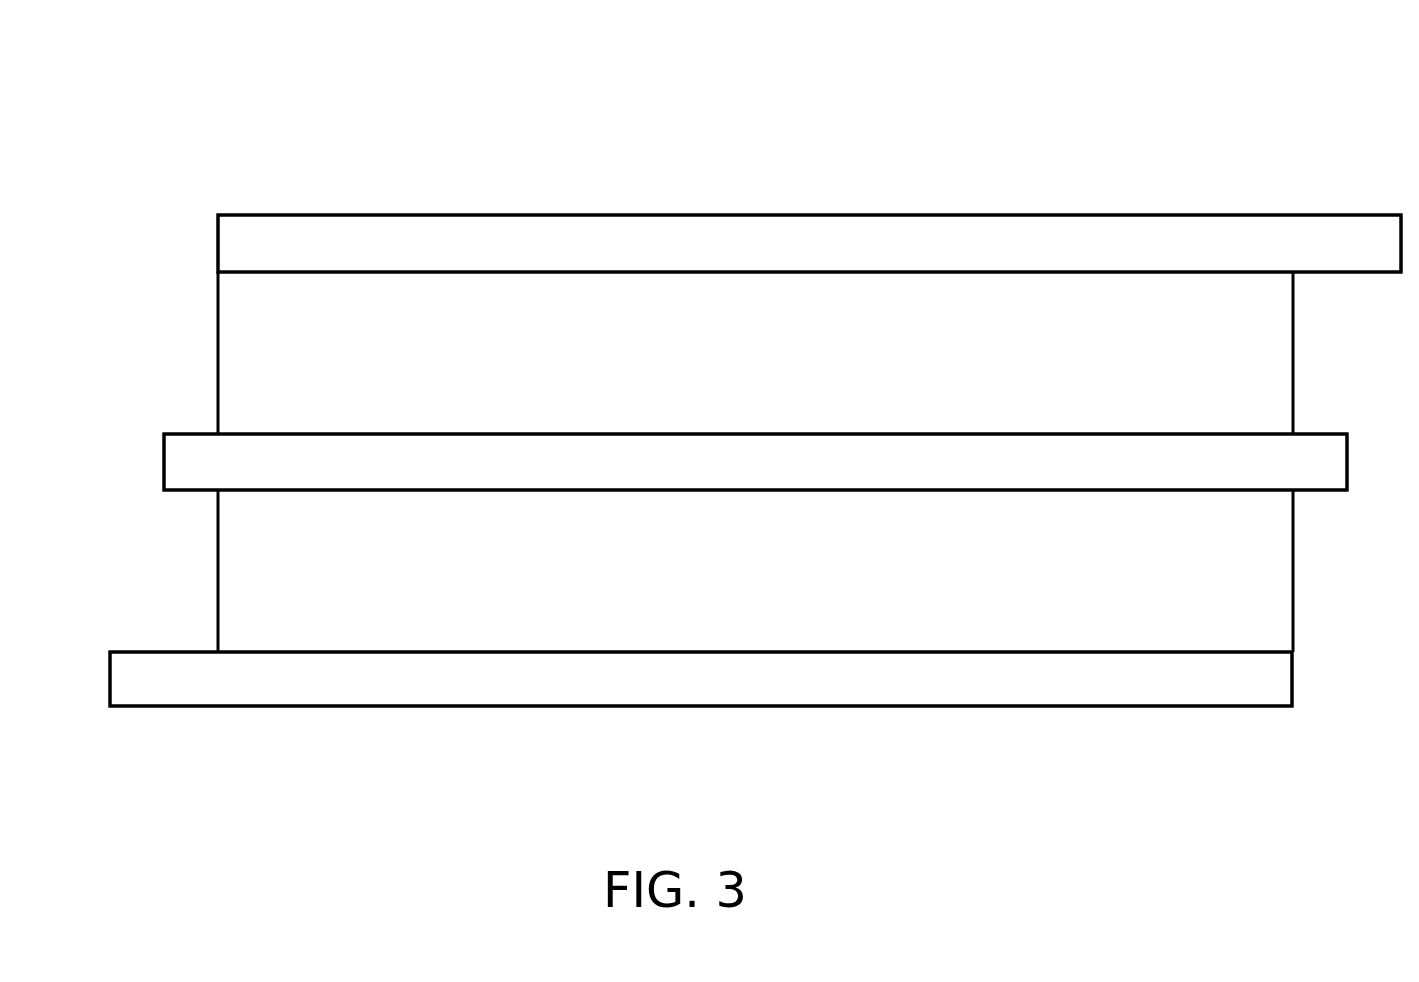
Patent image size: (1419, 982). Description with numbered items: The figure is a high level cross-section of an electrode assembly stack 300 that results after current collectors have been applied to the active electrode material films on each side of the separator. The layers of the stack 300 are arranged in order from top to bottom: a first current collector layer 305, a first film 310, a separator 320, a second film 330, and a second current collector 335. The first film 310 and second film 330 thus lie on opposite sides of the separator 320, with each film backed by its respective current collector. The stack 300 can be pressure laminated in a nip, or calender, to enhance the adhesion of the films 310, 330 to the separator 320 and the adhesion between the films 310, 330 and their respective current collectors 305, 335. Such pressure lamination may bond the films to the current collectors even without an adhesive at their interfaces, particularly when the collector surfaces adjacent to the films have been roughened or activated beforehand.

The electrode assembly stack 300 is at (712, 112).
The first current collector layer 305 is at (809, 243).
The first film 310 is at (755, 353).
The separator 320 is at (755, 462).
The second film 330 is at (755, 571).
The second current collector 335 is at (701, 679).